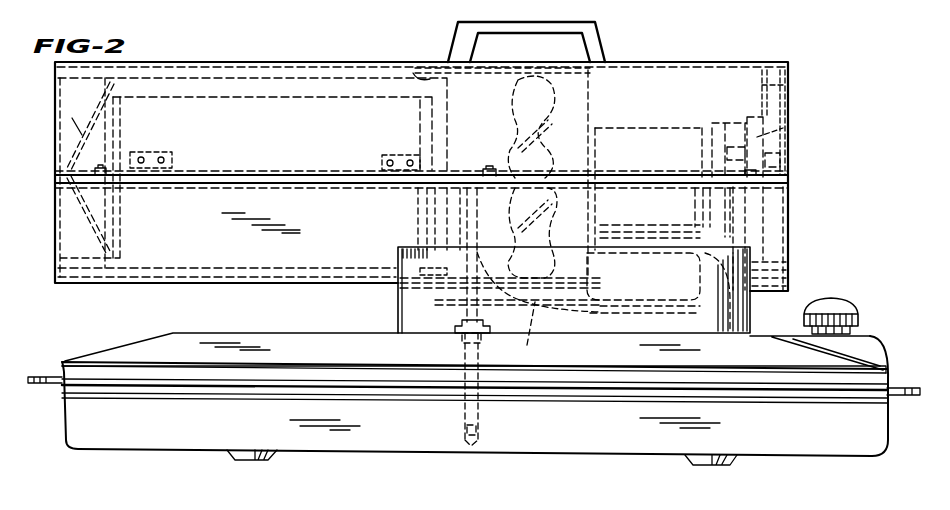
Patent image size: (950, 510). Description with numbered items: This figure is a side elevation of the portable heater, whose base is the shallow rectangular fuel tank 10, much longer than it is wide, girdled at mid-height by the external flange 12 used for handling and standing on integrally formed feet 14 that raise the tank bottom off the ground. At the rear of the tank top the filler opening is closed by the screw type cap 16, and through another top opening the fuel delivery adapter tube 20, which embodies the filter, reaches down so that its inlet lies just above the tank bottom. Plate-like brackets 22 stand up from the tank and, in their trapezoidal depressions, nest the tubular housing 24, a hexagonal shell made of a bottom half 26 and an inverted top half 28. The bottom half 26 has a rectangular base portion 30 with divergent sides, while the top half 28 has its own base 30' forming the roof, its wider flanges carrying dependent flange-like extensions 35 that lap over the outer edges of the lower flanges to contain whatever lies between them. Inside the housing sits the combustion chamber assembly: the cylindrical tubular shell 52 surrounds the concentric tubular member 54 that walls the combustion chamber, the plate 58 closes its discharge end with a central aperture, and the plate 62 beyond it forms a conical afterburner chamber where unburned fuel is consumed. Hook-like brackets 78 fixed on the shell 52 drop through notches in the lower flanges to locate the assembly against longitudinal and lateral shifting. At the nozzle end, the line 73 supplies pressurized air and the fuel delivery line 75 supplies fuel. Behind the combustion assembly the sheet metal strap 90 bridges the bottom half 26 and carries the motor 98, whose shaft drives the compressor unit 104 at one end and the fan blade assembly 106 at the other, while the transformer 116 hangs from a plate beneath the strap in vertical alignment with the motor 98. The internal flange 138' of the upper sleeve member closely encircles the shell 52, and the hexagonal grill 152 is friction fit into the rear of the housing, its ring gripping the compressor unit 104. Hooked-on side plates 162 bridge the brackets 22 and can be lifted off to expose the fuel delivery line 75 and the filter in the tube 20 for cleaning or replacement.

The fuel tank 10 is at (62, 356).
The external flange 12 is at (332, 368).
The feet 14 is at (265, 462).
The screw type cap 16 is at (832, 312).
The fuel delivery adapter tube 20 is at (463, 360).
The brackets 22 is at (396, 312).
The tubular housing 24 is at (660, 60).
The bottom half 26 is at (316, 226).
The top half 28 is at (286, 137).
The base portion 30 is at (227, 294).
The base 30' is at (421, 43).
The flange-like extensions 35 is at (318, 170).
The tubular shell 52 is at (356, 97).
The tubular member 54 is at (302, 78).
The plate 58 is at (122, 118).
The plate 62 is at (57, 110).
The line 73 is at (521, 333).
The fuel delivery line 75 is at (463, 303).
The hook-like brackets 78 is at (180, 148).
The strap 90 is at (598, 215).
The motor 98 is at (665, 128).
The compressor unit 104 is at (788, 127).
The fan blade assembly 106 is at (507, 98).
The transformer 116 is at (617, 337).
The internal flange 138' is at (491, 50).
The hexagonal grill 152 is at (788, 83).
The side plates 162 is at (648, 284).